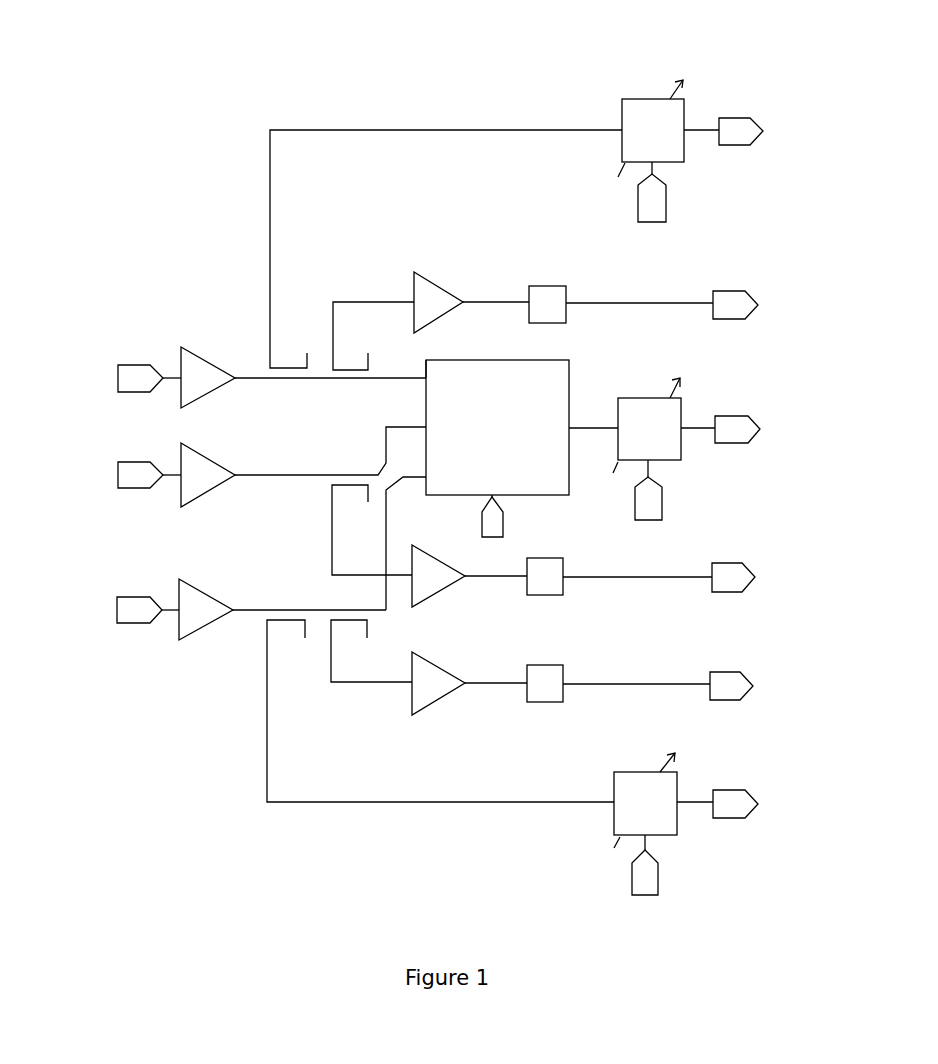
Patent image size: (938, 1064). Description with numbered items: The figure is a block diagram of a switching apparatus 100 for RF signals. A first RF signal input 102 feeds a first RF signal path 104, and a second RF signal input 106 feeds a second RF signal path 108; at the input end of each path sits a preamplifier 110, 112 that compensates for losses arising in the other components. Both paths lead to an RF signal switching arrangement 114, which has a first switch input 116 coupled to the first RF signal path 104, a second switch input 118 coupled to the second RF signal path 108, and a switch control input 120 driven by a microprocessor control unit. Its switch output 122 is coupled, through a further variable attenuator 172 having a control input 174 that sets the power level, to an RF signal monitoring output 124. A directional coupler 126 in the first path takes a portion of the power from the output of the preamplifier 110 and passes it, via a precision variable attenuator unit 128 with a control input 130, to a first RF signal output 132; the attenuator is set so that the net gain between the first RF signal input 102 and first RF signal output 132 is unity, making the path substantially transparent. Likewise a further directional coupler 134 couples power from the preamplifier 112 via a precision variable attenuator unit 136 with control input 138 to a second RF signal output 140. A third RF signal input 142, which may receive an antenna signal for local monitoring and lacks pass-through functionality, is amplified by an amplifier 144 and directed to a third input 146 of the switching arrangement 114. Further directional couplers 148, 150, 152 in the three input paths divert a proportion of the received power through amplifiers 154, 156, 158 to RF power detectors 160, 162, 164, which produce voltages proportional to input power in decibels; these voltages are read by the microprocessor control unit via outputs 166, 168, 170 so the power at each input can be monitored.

The switching apparatus 100 is at (66, 53).
The first RF signal input 102 is at (148, 341).
The first RF signal path 104 is at (330, 415).
The second RF signal input 106 is at (139, 646).
The second RF signal path 108 is at (309, 574).
The preamplifier 110 is at (214, 349).
The preamplifier 112 is at (206, 648).
The RF signal switching arrangement 114 is at (545, 416).
The first switch input 116 is at (451, 353).
The second switch input 118 is at (408, 543).
The switch control input 120 is at (528, 518).
The switch output 122 is at (594, 465).
The RF signal monitoring output 124 is at (750, 408).
The directional coupler 126 is at (446, 249).
The precision variable attenuator unit 128 is at (651, 103).
The control input 130 is at (690, 193).
The first RF signal output 132 is at (755, 107).
The directional coupler 134 is at (440, 711).
The precision variable attenuator unit 136 is at (608, 817).
The control input 138 is at (682, 865).
The second RF signal output 140 is at (742, 785).
The third RF signal input 142 is at (138, 507).
The amplifier 144 is at (224, 484).
The third input 146 is at (330, 430).
The directional coupler 148 is at (373, 336).
The directional coupler 150 is at (372, 530).
The directional coupler 152 is at (371, 651).
The amplifier 154 is at (454, 285).
The amplifier 156 is at (454, 594).
The amplifier 158 is at (453, 704).
The RF power detector 160 is at (555, 289).
The RF power detector 162 is at (550, 569).
The RF power detector 164 is at (550, 676).
The output 166 is at (692, 281).
The output 168 is at (690, 565).
The output 170 is at (686, 671).
The variable attenuator 172 is at (688, 409).
The control input 174 is at (695, 490).